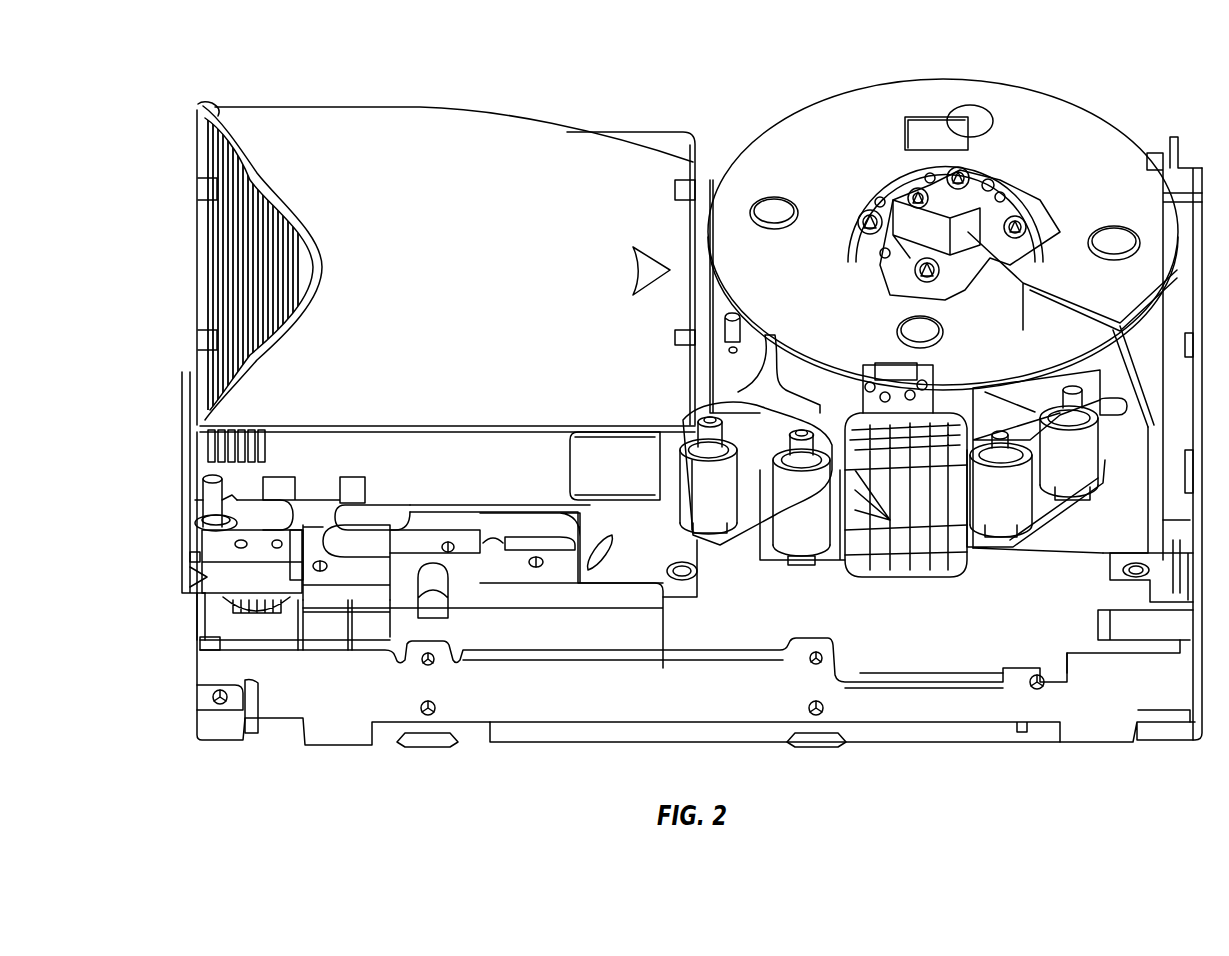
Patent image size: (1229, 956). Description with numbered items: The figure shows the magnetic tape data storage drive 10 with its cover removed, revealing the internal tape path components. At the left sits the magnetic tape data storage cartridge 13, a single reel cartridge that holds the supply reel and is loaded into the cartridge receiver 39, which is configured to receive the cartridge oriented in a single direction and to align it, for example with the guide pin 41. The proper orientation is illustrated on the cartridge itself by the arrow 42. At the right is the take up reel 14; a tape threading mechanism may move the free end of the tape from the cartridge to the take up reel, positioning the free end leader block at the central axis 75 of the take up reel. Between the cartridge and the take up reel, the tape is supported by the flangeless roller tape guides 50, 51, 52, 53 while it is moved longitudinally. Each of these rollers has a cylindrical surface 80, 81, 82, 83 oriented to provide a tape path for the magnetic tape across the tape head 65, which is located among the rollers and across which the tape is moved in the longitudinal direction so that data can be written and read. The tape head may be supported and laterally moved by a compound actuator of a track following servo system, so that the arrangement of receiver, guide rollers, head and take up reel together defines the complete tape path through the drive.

The magnetic tape data storage drive 10 is at (737, 61).
The magnetic tape data storage cartridge 13 is at (365, 107).
The take up reel 14 is at (1067, 98).
The cartridge receiver 39 is at (182, 452).
The guide pin 41 is at (200, 500).
The arrow 42 is at (651, 255).
The roller tape guide 50 is at (692, 481).
The roller tape guide 51 is at (1073, 457).
The roller tape guide 52 is at (785, 514).
The roller tape guide 53 is at (998, 514).
The tape head 65 is at (920, 548).
The central axis 75 is at (893, 270).
The cylindrical surface 80 is at (690, 498).
The cylindrical surface 81 is at (1100, 460).
The cylindrical surface 82 is at (770, 490).
The cylindrical surface 83 is at (1035, 500).